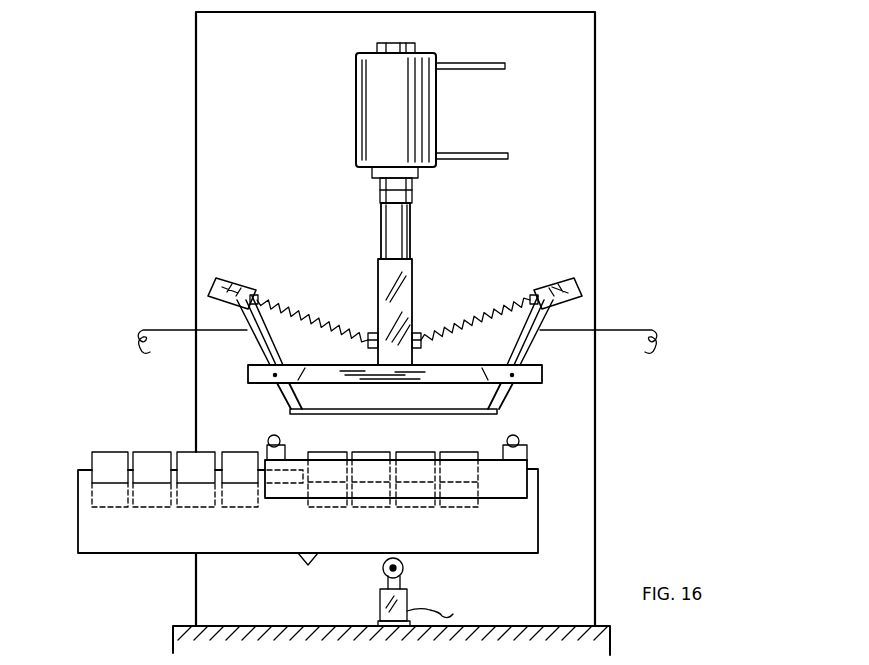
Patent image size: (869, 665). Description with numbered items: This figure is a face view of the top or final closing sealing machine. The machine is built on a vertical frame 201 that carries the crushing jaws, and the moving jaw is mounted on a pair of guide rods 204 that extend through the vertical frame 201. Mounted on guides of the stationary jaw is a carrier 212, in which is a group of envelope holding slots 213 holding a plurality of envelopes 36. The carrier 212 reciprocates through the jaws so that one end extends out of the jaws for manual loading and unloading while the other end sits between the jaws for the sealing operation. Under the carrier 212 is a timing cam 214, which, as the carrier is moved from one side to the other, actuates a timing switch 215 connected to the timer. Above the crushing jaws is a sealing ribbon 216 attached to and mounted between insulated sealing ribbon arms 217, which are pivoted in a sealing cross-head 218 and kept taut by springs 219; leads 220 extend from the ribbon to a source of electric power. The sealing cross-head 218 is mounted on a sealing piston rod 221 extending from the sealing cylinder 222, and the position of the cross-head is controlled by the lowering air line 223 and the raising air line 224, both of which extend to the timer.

The vertical frame 201 is at (597, 192).
The guide rods 204 is at (268, 436).
The carrier 212 is at (105, 553).
The envelope holding slots 213 is at (105, 484).
The timing cam 214 is at (305, 559).
The timing switch 215 is at (383, 567).
The sealing ribbon 216 is at (492, 416).
The insulated sealing ribbon arms 217 is at (253, 348).
The sealing cross-head 218 is at (436, 365).
The springs 219 is at (310, 313).
The leads 220 is at (192, 330).
The sealing piston rod 221 is at (409, 230).
The sealing cylinder 222 is at (436, 120).
The lowering air line 223 is at (490, 63).
The raising air line 224 is at (493, 154).
The envelopes 36 is at (113, 452).